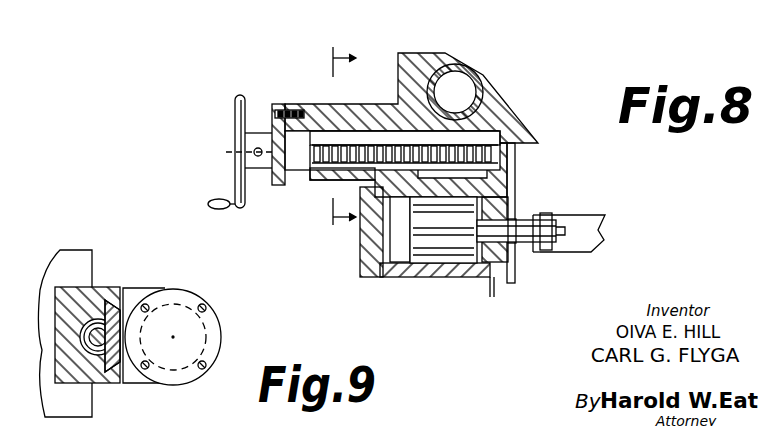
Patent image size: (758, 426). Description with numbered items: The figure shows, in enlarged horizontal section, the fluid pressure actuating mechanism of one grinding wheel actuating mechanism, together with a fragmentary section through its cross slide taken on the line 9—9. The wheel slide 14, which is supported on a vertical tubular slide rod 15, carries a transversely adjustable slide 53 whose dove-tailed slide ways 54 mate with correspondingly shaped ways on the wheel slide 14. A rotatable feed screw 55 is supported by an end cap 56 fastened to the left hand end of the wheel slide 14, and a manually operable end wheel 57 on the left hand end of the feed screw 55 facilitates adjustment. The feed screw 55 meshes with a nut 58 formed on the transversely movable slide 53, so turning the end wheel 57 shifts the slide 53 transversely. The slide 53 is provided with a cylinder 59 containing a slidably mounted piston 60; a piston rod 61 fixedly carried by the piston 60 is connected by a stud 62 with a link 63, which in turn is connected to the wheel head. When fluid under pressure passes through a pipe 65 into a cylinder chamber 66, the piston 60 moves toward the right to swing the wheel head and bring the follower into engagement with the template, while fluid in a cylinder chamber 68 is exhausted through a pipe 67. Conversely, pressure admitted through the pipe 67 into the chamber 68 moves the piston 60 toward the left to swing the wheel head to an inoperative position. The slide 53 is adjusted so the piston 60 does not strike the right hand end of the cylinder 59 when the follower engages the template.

In FIG. 8, the section line 9— 9 is at (339, 138).
In FIG. 8, the wheel slide 14 is at (398, 72).
In FIG. 9, the wheel slide 14 is at (75, 262).
In FIG. 8, the tubular slide rod 15 is at (436, 64).
In FIG. 8, the transversely adjustable slide 53 is at (317, 179).
In FIG. 9, the transversely adjustable slide 53 is at (148, 290).
In FIG. 9, the dove-tailed slide ways 54 is at (120, 313).
In FIG. 8, the feed screw 55 is at (303, 158).
In FIG. 9, the feed screw 55 is at (99, 347).
In FIG. 8, the end cap 56 is at (281, 109).
In FIG. 8, the end wheel 57 is at (238, 106).
In FIG. 8, the nut 58 is at (388, 150).
In FIG. 9, the nut 58 is at (90, 328).
In FIG. 8, the cylinder 59 is at (404, 279).
In FIG. 9, the cylinder 59 is at (221, 328).
In FIG. 8, the piston 60 is at (457, 250).
In FIG. 8, the piston rod 61 is at (517, 243).
In FIG. 8, the stud 62 is at (547, 214).
In FIG. 8, the link 63 is at (594, 224).
In FIG. 8, the pipe 65 is at (375, 279).
In FIG. 8, the cylinder chamber 66 is at (400, 246).
In FIG. 8, the pipe 67 is at (496, 298).
In FIG. 8, the cylinder chamber 68 is at (512, 246).